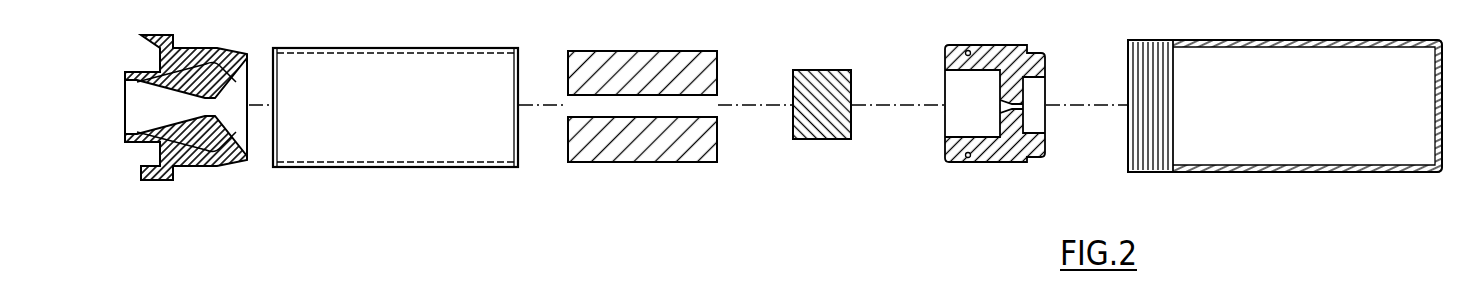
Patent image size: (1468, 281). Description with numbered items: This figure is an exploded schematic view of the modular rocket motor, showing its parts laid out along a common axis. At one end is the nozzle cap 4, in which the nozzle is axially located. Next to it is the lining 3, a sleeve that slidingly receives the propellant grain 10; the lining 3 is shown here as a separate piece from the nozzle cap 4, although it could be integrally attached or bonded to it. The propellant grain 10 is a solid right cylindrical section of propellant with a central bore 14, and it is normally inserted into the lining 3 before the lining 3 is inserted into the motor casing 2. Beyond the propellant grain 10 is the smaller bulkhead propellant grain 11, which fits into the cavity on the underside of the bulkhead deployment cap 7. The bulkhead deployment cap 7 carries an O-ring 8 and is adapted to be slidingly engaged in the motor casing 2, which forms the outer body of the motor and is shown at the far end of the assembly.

The motor casing 2 is at (1310, 172).
The lining 3 is at (405, 167).
The nozzle cap 4 is at (201, 184).
The bulkhead deployment cap 7 is at (1040, 162).
The O-ring 8 is at (970, 163).
The propellant grain 10 is at (678, 153).
The bulkhead propellant grain 11 is at (832, 140).
The central bore 14 is at (720, 98).